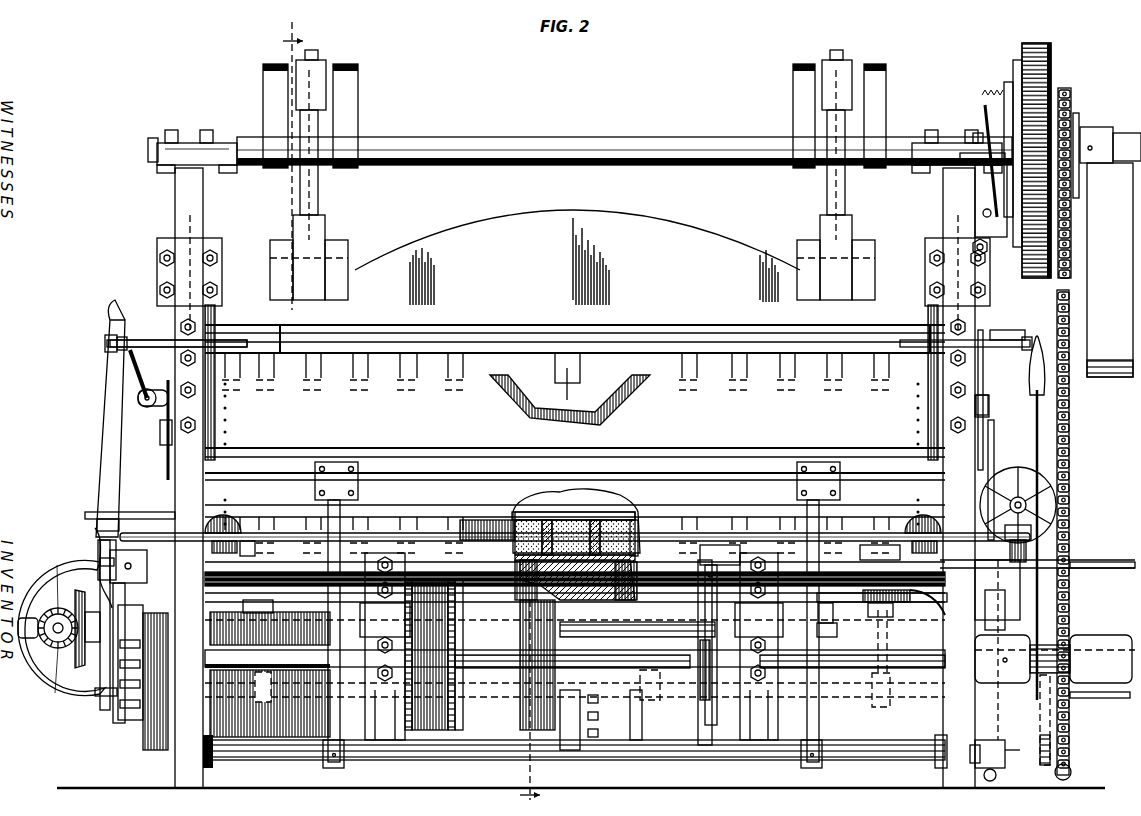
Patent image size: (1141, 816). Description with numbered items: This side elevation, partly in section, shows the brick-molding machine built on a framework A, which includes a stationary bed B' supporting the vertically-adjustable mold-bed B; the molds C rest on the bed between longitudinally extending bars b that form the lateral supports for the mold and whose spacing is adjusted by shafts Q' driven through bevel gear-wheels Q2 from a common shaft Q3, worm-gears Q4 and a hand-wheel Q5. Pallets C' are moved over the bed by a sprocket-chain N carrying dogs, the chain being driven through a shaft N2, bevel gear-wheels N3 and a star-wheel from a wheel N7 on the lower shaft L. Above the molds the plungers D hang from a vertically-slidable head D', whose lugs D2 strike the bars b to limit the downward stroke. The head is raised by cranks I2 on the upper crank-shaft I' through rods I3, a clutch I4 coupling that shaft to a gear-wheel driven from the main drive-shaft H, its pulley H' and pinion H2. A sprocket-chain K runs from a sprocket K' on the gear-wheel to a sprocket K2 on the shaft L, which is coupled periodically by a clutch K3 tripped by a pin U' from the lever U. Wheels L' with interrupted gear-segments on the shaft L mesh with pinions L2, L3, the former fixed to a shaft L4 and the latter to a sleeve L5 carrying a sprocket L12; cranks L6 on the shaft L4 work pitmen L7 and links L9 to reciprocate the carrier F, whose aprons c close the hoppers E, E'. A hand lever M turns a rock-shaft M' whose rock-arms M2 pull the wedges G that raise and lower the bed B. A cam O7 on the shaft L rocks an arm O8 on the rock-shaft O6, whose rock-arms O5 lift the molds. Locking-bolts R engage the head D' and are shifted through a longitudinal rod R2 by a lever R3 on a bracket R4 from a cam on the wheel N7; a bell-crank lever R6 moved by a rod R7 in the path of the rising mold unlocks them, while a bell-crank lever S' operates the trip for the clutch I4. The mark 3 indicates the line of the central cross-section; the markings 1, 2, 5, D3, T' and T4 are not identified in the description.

The gear 1 is at (1035, 47).
The section line 2 is at (293, 156).
The section line 3 is at (530, 708).
The bracket 5 is at (988, 428).
The framework A is at (183, 200).
The mold-bed B is at (730, 547).
The stationary bed B' is at (893, 665).
The molds C is at (576, 528).
The pallets C' is at (547, 506).
The shelves or aprons c is at (762, 452).
The longitudinally-extending bars b is at (596, 520).
The plunger D is at (570, 389).
The vertically-slidable frame D' is at (577, 248).
The lugs D2 is at (925, 356).
The side plate D3 is at (215, 335).
The hopper E is at (575, 391).
The hopper E' is at (557, 384).
The reciprocating carrier F is at (575, 508).
The wedges G is at (270, 605).
The main drive-shaft H is at (634, 332).
The pulley H' is at (1107, 245).
The pinion H2 is at (995, 335).
The crank-shaft I' is at (624, 136).
The cranks I2 is at (800, 118).
The rods I3 is at (830, 180).
The clutch I4 is at (984, 112).
The sprocket-chain K is at (1079, 535).
The sprocket K' is at (1084, 183).
The sprocket K2 is at (1070, 616).
The clutch K3 is at (1042, 722).
The shaft L is at (594, 634).
The wheels L' is at (430, 682).
The pinion L2 is at (380, 750).
The pinion L3 is at (460, 740).
The shaft L4 is at (580, 700).
The sleeve L5 is at (470, 535).
The cranks L6 is at (325, 675).
The pitmen L7 is at (833, 612).
The links L9 is at (350, 505).
The sprocket L12 is at (575, 596).
The lever M is at (1062, 518).
The rock-shaft M' is at (575, 652).
The rock-arms M2 is at (575, 637).
The sprocket-chain N is at (633, 520).
The shaft N2 is at (40, 612).
The bevel gear-wheels N3 is at (105, 562).
The wheel N7 is at (100, 690).
The rock-arms O5 is at (100, 565).
The rock-shaft O6 is at (250, 540).
The cam O7 is at (650, 700).
The rock-arm O8 is at (720, 545).
The shafts Q' is at (575, 511).
The bevel gear-wheels Q2 is at (225, 518).
The common shaft Q3 is at (1030, 502).
The worm-gears Q4 is at (1025, 535).
The hand-wheel Q5 is at (1018, 467).
The locking-bolts R is at (165, 335).
The slidable rod R2 is at (170, 347).
The lever R3 is at (112, 390).
The bracket R4 is at (155, 512).
The bell-crank lever R6 is at (137, 368).
The vertically-slidable rod R7 is at (163, 460).
The bell-crank lever S' is at (959, 459).
The plate T' is at (997, 141).
The bar T4 is at (1013, 80).
The lever U is at (995, 435).
The pin U' is at (1006, 753).